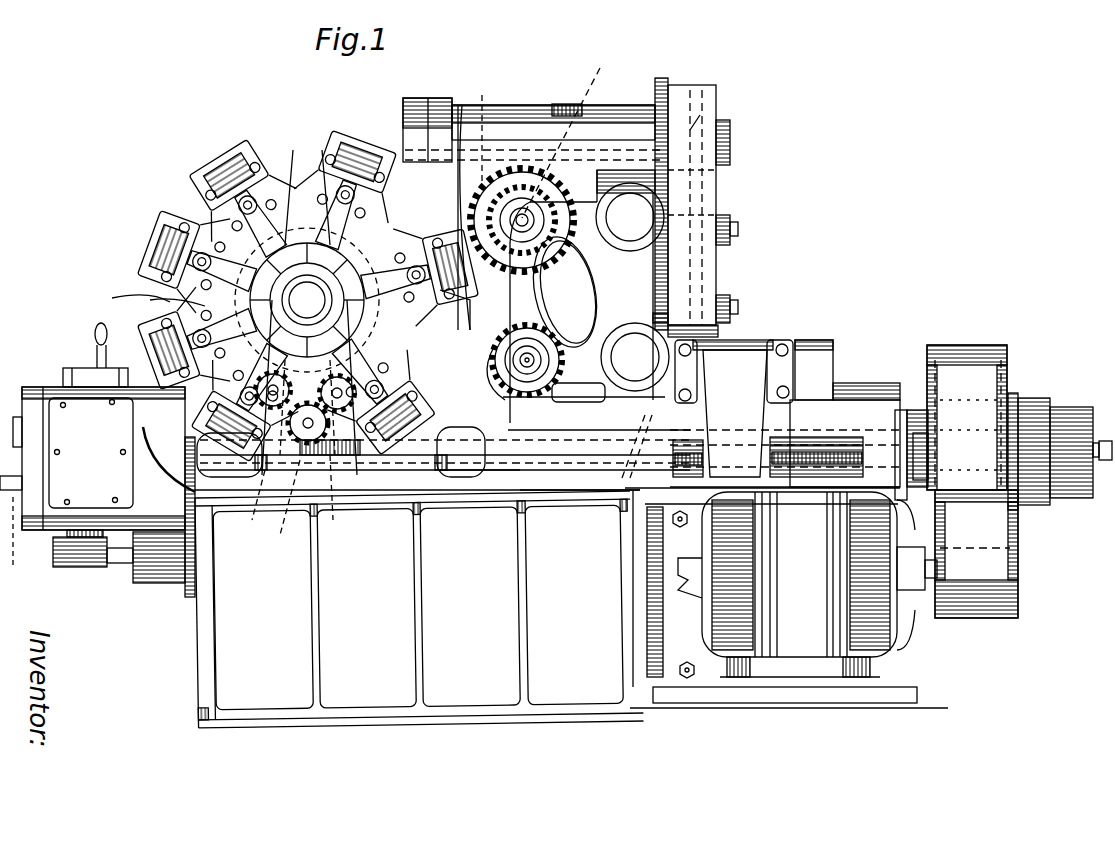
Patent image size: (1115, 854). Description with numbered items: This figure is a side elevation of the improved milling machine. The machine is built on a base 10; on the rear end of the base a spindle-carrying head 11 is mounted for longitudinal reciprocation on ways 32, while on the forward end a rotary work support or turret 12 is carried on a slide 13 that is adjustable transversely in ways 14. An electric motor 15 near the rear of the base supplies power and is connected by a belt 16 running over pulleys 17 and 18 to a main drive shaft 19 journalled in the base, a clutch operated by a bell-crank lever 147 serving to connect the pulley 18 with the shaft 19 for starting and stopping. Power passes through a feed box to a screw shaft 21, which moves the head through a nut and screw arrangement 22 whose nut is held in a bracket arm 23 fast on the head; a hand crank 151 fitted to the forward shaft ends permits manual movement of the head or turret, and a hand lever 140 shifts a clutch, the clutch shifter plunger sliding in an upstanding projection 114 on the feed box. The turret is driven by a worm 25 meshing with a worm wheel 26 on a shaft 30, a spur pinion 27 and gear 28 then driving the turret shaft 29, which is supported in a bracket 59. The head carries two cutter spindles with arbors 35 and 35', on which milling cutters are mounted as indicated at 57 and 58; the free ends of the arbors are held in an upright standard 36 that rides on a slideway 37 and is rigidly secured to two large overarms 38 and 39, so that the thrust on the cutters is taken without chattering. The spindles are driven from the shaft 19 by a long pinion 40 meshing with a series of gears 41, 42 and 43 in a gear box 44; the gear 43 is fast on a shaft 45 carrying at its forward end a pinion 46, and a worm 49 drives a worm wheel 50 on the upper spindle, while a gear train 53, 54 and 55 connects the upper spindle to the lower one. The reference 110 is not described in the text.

The base 10 is at (419, 609).
The spindle-carrying head 11 is at (617, 108).
The turret 12 is at (303, 165).
The slide 13 is at (420, 452).
The ways 14 is at (260, 446).
The electric motor 15 is at (786, 598).
The belt 16 is at (1000, 378).
The pulley 17 is at (975, 550).
The pulley 18 is at (978, 355).
The main drive shaft 19 is at (882, 443).
The screw shaft 21 is at (506, 466).
The nut and screw arrangement 22 is at (790, 432).
The bracket arm 23 is at (745, 350).
The worm 25 is at (284, 508).
The worm wheel 26 is at (307, 387).
The spur pinion 27 is at (251, 506).
The gear 28 is at (162, 298).
The turret shaft 29 is at (307, 300).
The shaft 30 is at (330, 492).
The ways 32 is at (800, 432).
The cutter-carrying arbor 35 is at (532, 219).
The cutter-carrying arbor 35' is at (565, 292).
The upright standard 36 is at (596, 300).
The slideway 37 is at (553, 490).
The arm or shaft 38 is at (630, 217).
The arm or shaft 39 is at (635, 357).
The pinion 40 is at (622, 436).
The gear 41 is at (648, 416).
The gear 42 is at (692, 212).
The gear 43 is at (700, 122).
The gear box 44 is at (706, 185).
The shaft 45 is at (702, 118).
The pinion 46 is at (430, 100).
The worm 49 is at (556, 112).
The worm wheel 50 is at (571, 133).
The gear 53 is at (486, 128).
The gear 54 is at (466, 310).
The gear 55 is at (544, 360).
The milling cutter mounting 57 is at (460, 105).
The milling cutter mounting 58 is at (489, 390).
The standard or bracket 59 is at (127, 298).
The control box 110 is at (35, 386).
The upstanding projection 114 is at (66, 368).
The hand lever 140 is at (95, 332).
The bell-crank lever 147 is at (1100, 441).
The hand crank 151 is at (14, 562).